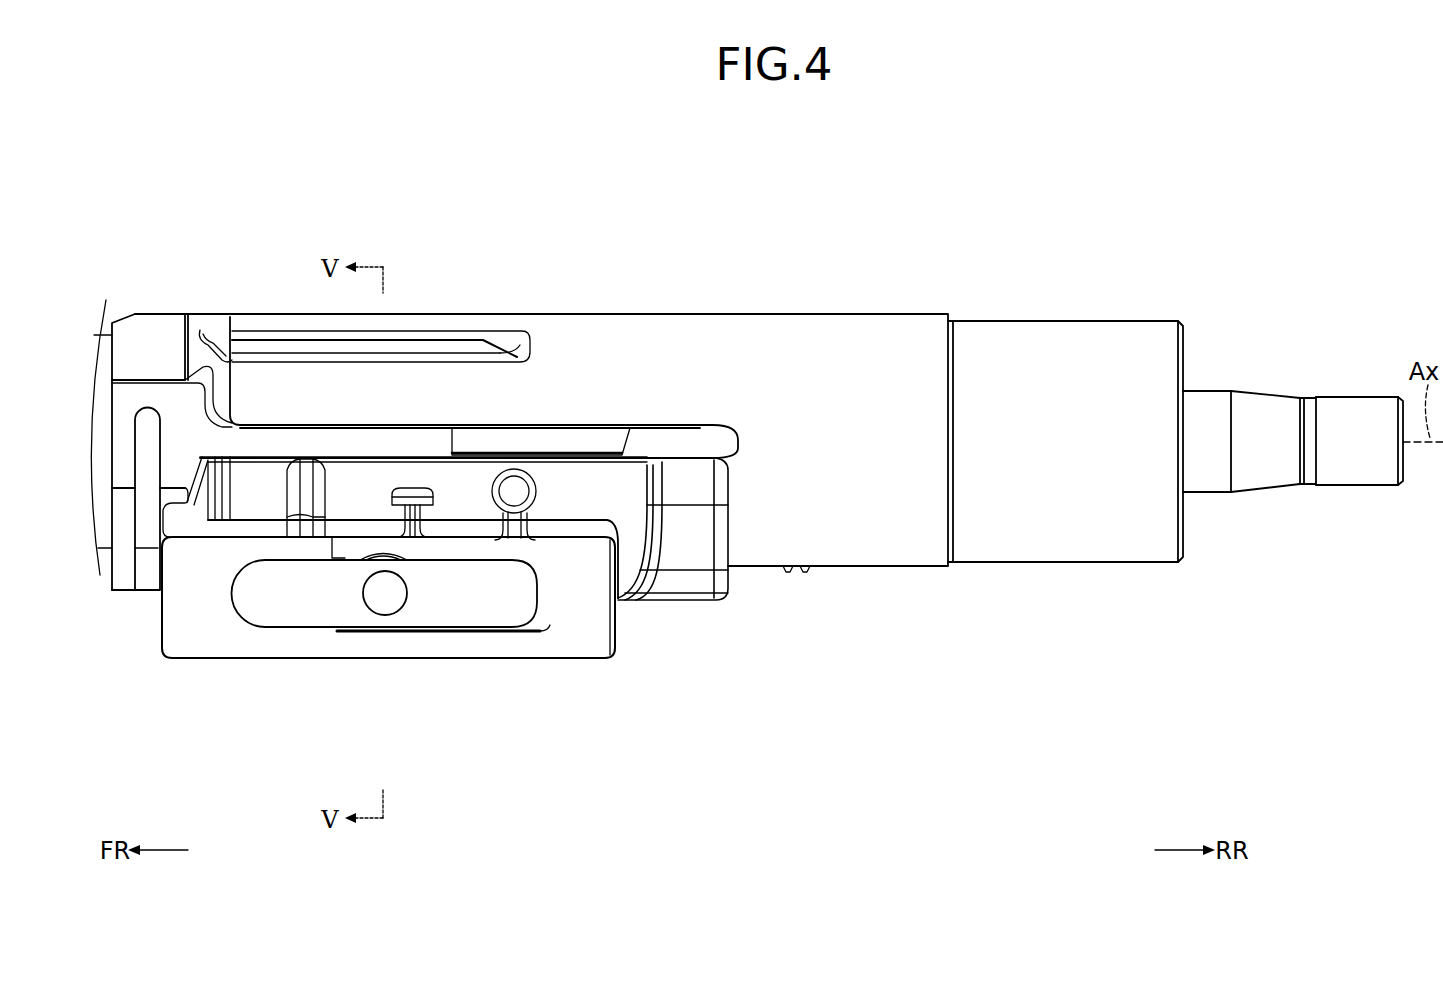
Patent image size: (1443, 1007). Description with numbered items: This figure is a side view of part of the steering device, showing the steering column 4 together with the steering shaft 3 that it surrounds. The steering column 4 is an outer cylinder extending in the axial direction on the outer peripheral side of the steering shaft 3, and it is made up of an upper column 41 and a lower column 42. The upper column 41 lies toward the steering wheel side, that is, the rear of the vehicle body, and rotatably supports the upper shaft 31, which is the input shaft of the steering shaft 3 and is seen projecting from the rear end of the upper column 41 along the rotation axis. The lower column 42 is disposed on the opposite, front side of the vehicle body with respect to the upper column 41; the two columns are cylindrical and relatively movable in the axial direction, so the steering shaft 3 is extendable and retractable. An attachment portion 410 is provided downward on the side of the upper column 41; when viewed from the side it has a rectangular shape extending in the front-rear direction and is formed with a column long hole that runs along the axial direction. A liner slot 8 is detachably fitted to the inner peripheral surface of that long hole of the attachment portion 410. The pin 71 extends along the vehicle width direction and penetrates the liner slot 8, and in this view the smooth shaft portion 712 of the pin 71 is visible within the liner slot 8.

The steering column 4 is at (1090, 316).
The lower column 42 is at (102, 347).
The upper column 41 is at (1008, 525).
The upper shaft 31 is at (1268, 462).
The steering shaft 3 is at (1293, 497).
The attachment portion 410 is at (567, 625).
The liner slot 8 is at (305, 595).
The shaft portion 712 is at (384, 597).
The pin 71 is at (386, 660).